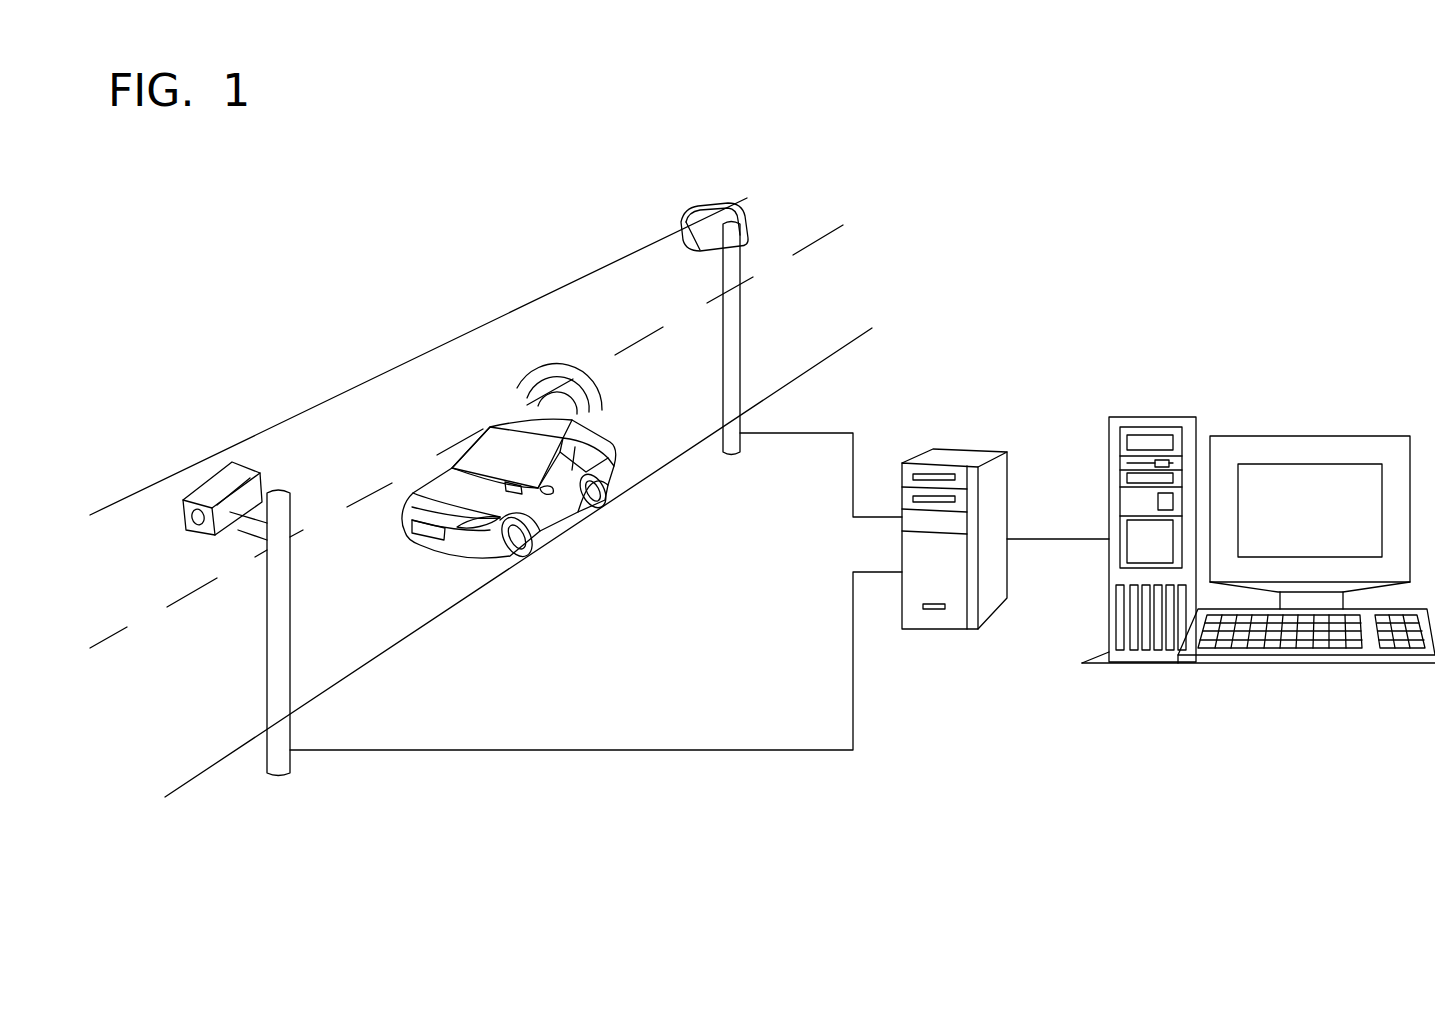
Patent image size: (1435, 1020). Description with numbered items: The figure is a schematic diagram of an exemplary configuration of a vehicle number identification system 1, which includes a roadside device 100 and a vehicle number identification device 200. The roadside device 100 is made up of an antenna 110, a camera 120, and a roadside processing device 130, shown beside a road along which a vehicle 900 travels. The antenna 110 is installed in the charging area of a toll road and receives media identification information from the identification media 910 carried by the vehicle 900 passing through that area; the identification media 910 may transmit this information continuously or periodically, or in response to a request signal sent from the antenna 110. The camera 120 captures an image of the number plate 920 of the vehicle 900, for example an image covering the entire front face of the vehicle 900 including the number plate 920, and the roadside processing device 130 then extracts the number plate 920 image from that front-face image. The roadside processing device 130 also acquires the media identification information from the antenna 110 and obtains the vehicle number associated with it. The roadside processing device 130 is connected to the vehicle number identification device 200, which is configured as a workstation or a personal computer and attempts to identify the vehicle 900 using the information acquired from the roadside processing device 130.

The vehicle number identification system 1 is at (1233, 192).
The roadside device 100 is at (965, 330).
The antenna 110 is at (682, 213).
The camera 120 is at (213, 480).
The roadside processing device 130 is at (968, 450).
The vehicle number identification device 200 is at (1308, 435).
The vehicle 900 is at (613, 471).
The identification media 910 is at (530, 492).
The number plate 920 is at (443, 550).